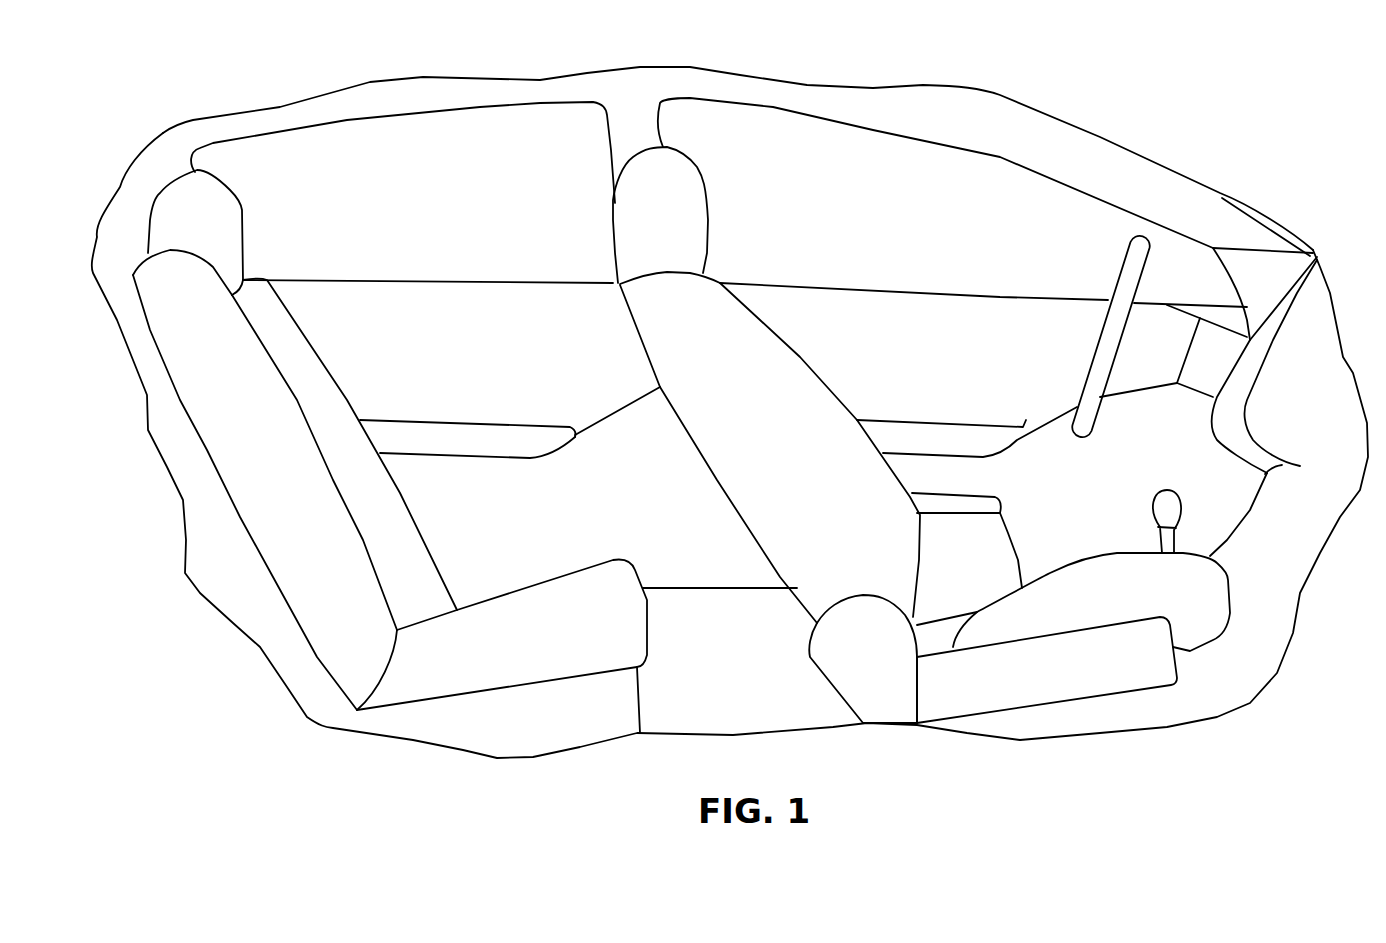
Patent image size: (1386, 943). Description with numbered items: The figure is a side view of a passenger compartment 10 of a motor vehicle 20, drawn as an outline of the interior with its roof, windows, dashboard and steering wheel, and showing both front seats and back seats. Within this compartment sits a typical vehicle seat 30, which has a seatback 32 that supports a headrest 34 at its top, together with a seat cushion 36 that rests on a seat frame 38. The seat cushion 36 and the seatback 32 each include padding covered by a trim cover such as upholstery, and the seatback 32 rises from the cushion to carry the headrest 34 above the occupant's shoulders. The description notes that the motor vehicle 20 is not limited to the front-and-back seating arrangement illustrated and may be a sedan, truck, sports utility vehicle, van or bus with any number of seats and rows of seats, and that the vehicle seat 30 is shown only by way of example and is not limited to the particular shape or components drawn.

The passenger compartment 10 is at (946, 186).
The motor vehicle 20 is at (538, 79).
The vehicle seat 30 is at (723, 435).
The seatback 32 is at (717, 480).
The headrest 34 is at (612, 224).
The seat cushion 36 is at (1230, 587).
The seat frame 38 is at (1067, 702).